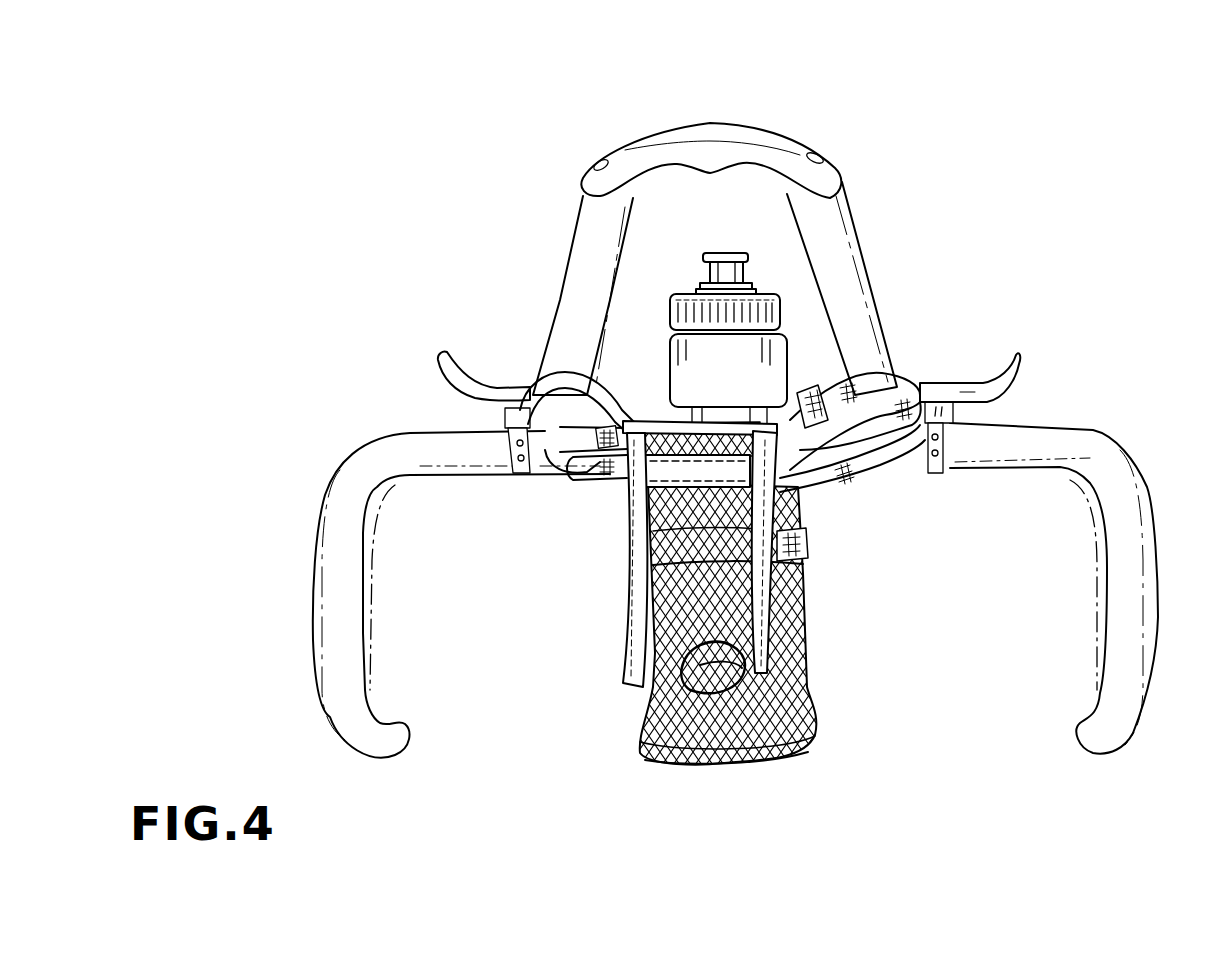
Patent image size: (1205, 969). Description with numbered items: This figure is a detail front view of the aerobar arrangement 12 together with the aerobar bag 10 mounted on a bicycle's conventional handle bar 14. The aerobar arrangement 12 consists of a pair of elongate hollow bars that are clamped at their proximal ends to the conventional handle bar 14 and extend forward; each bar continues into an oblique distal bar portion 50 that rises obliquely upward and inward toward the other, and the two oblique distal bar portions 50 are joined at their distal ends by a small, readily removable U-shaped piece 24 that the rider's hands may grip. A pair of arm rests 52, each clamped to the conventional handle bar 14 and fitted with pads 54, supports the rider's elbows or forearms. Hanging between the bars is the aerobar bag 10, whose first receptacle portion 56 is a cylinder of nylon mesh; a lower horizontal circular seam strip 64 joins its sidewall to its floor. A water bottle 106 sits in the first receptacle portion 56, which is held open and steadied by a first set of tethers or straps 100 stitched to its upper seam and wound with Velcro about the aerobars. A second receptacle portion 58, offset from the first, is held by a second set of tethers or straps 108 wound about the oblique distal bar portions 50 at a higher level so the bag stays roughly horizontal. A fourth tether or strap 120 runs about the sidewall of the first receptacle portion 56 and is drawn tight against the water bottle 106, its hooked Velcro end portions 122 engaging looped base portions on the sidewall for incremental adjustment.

The aerobar bag 10 is at (882, 657).
The aerobar arrangement 12 is at (362, 300).
The conventional handle bar 14 is at (418, 448).
The U-shaped piece 24 is at (762, 140).
The oblique distal bar portion 50 is at (593, 235).
The arm rest 52 is at (518, 393).
The pad 54 is at (478, 378).
The first receptacle portion 56 is at (808, 655).
The second receptacle portion 58 is at (640, 587).
The lower horizontal circular seam strip 64 is at (727, 768).
The first set of tethers or straps 100 is at (580, 474).
The water bottle 106 is at (703, 381).
The second set of tethers or straps 108 is at (508, 414).
The fourth tether or strap 120 is at (647, 523).
The hooked Velcro end portion 122 is at (800, 542).